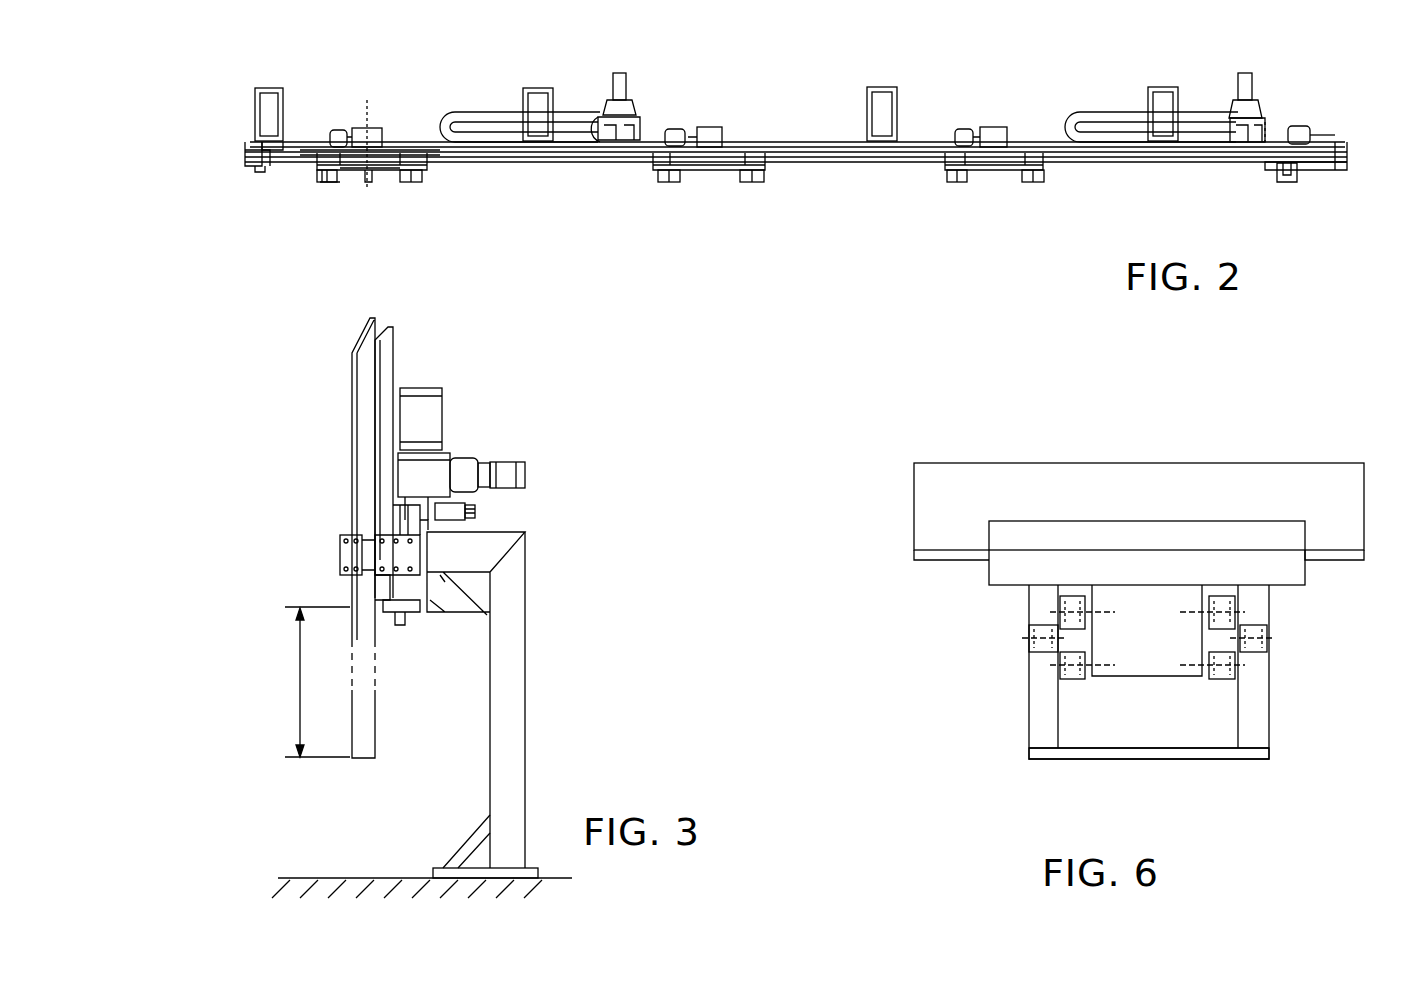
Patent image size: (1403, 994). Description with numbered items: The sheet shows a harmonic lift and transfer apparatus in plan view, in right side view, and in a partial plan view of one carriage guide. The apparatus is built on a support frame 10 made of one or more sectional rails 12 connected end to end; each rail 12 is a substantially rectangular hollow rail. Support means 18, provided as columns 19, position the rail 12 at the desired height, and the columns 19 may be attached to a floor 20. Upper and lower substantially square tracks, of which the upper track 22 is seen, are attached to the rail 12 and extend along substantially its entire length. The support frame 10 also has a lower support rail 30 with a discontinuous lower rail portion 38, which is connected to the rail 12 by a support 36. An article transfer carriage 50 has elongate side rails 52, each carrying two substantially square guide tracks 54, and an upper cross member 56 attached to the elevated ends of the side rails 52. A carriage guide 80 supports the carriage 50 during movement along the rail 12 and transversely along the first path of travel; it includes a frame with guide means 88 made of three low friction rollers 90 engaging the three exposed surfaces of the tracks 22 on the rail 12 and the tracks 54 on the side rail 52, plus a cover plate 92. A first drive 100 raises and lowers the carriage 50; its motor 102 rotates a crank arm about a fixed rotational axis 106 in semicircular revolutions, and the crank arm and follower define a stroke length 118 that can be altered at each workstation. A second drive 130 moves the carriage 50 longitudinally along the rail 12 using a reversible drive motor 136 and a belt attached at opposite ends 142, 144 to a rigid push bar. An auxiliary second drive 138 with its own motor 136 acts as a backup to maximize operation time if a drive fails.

In FIG. 2, the support frame 10 is at (228, 158).
In FIG. 2, the sectional rail 12 is at (250, 141).
In FIG. 3, the sectional rail 12 is at (392, 555).
In FIG. 6, the sectional rail 12 is at (1035, 474).
In FIG. 3, the support means 18 is at (465, 735).
In FIG. 2, the column 19 is at (255, 98).
In FIG. 3, the column 19 is at (512, 658).
In FIG. 3, the floor 20 is at (395, 878).
In FIG. 6, the upper track 22 is at (917, 559).
In FIG. 3, the lower support rail 30 is at (412, 622).
In FIG. 3, the support 36 is at (430, 610).
In FIG. 3, the lower rail portion 38 is at (385, 620).
In FIG. 2, the article transfer carriage 50 is at (430, 193).
In FIG. 3, the article transfer carriage 50 is at (323, 402).
In FIG. 3, the side rail 52 is at (352, 432).
In FIG. 6, the side rail 52 is at (1121, 672).
In FIG. 6, the guide track 54 is at (1080, 640).
In FIG. 2, the upper cross member 56 is at (388, 178).
In FIG. 2, the carriage guide 80 is at (430, 165).
In FIG. 3, the carriage guide 80 is at (340, 550).
In FIG. 6, the carriage guide 80 is at (1233, 532).
In FIG. 6, the guide means 88 is at (1210, 688).
In FIG. 6, the low friction roller 90 is at (1036, 638).
In FIG. 2, the cover plate 92 is at (330, 184).
In FIG. 6, the cover plate 92 is at (1199, 759).
In FIG. 3, the first drive 100 is at (482, 433).
In FIG. 2, the motor 102 is at (366, 130).
In FIG. 2, the rotational axis 106 is at (370, 185).
In FIG. 3, the stroke length 118 is at (300, 678).
In FIG. 2, the second drive 130 is at (690, 88).
In FIG. 2, the drive motor 136 is at (648, 135).
In FIG. 2, the auxiliary second drive 138 is at (1280, 120).
In FIG. 2, the belt end 142 is at (289, 144).
In FIG. 2, the belt end 144 is at (262, 162).